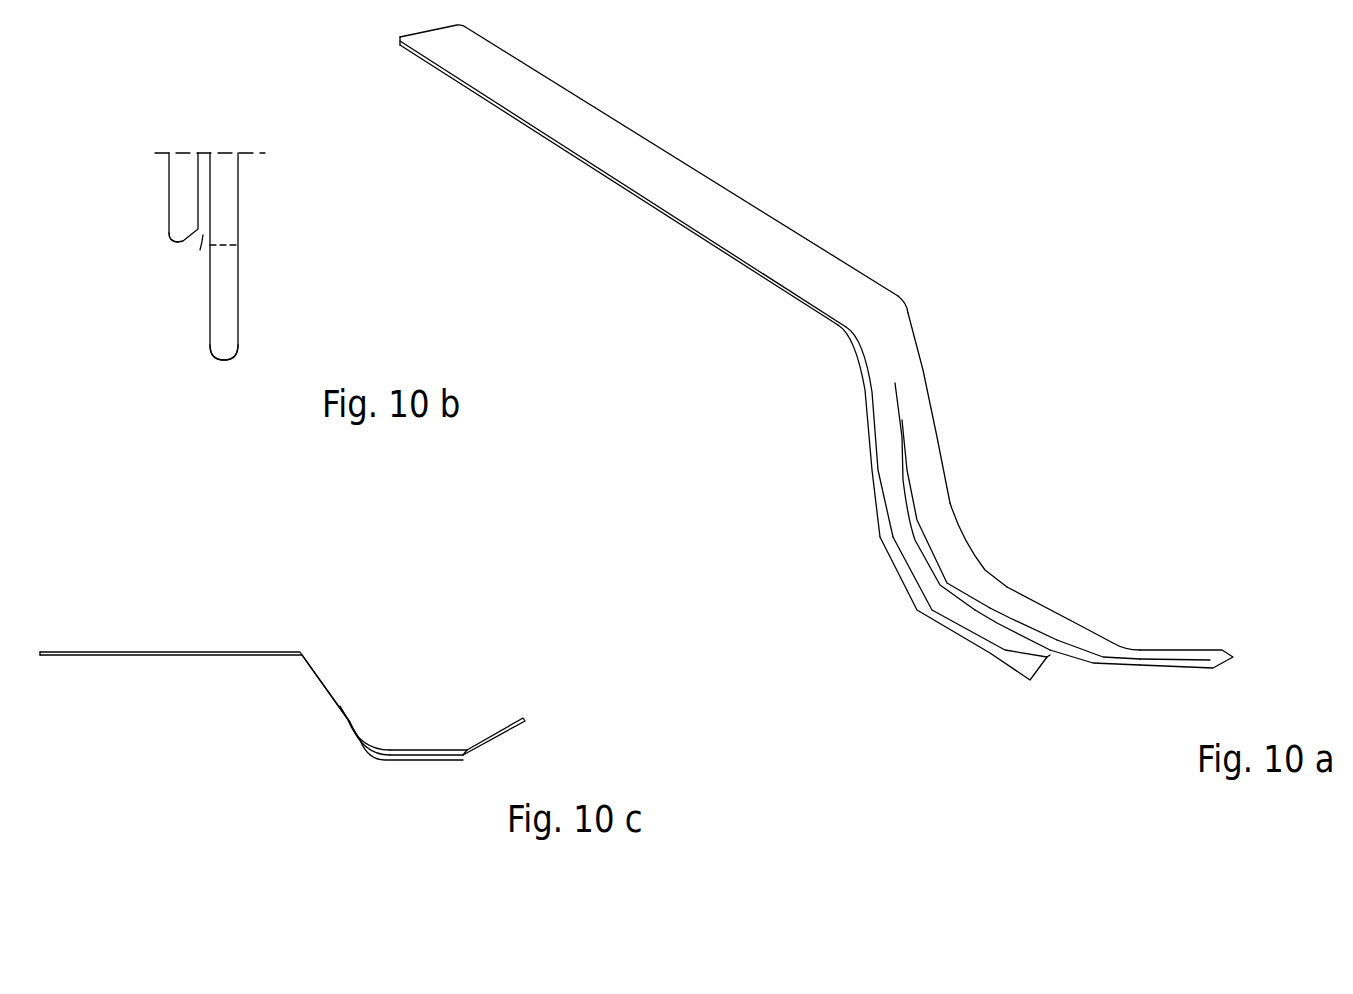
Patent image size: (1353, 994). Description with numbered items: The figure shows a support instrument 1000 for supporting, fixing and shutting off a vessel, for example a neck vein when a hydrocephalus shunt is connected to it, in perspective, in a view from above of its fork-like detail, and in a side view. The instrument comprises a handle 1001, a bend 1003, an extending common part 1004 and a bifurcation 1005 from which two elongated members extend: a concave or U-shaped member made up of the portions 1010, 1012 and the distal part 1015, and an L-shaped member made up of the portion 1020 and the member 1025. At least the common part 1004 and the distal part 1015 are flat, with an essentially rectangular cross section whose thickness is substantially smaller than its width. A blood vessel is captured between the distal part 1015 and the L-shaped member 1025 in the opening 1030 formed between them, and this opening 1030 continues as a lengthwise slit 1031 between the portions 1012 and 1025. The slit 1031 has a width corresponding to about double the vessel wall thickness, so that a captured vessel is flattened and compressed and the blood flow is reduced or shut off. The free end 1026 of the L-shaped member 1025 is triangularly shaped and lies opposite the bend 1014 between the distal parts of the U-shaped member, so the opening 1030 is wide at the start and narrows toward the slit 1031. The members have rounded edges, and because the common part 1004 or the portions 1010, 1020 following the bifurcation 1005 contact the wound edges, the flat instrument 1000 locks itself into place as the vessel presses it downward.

In FIG. 10a, the support instrument 1000 is at (785, 167).
In FIG. 10a, the handle 1001 is at (630, 157).
In FIG. 10a, the bend 1003 is at (818, 276).
In FIG. 10a, the extending common part 1004 is at (885, 338).
In FIG. 10a, the bifurcation 1005 is at (898, 388).
In FIG. 10a, the U-shaped member portion 1010 is at (928, 470).
In FIG. 10a, the U-shaped member portion 1012 is at (1053, 620).
In FIG. 10b, the U-shaped member portion 1012 is at (227, 205).
In FIG. 10c, the U-shaped member portion 1012 is at (412, 748).
In FIG. 10b, the bend 1014 is at (228, 250).
In FIG. 10c, the bend 1014 is at (470, 747).
In FIG. 10a, the distal part of U-shaped member 1015 is at (1185, 657).
In FIG. 10b, the distal part of U-shaped member 1015 is at (228, 335).
In FIG. 10c, the distal part of U-shaped member 1015 is at (507, 727).
In FIG. 10a, the L-shaped member portion 1020 is at (897, 523).
In FIG. 10a, the L-shaped member 1025 is at (993, 633).
In FIG. 10b, the L-shaped member 1025 is at (178, 170).
In FIG. 10c, the L-shaped member 1025 is at (415, 760).
In FIG. 10b, the free end 1026 is at (177, 236).
In FIG. 10a, the opening 1030 is at (1050, 655).
In FIG. 10b, the opening 1030 is at (203, 237).
In FIG. 10a, the lengthwise slit 1031 is at (950, 580).
In FIG. 10b, the lengthwise slit 1031 is at (203, 167).